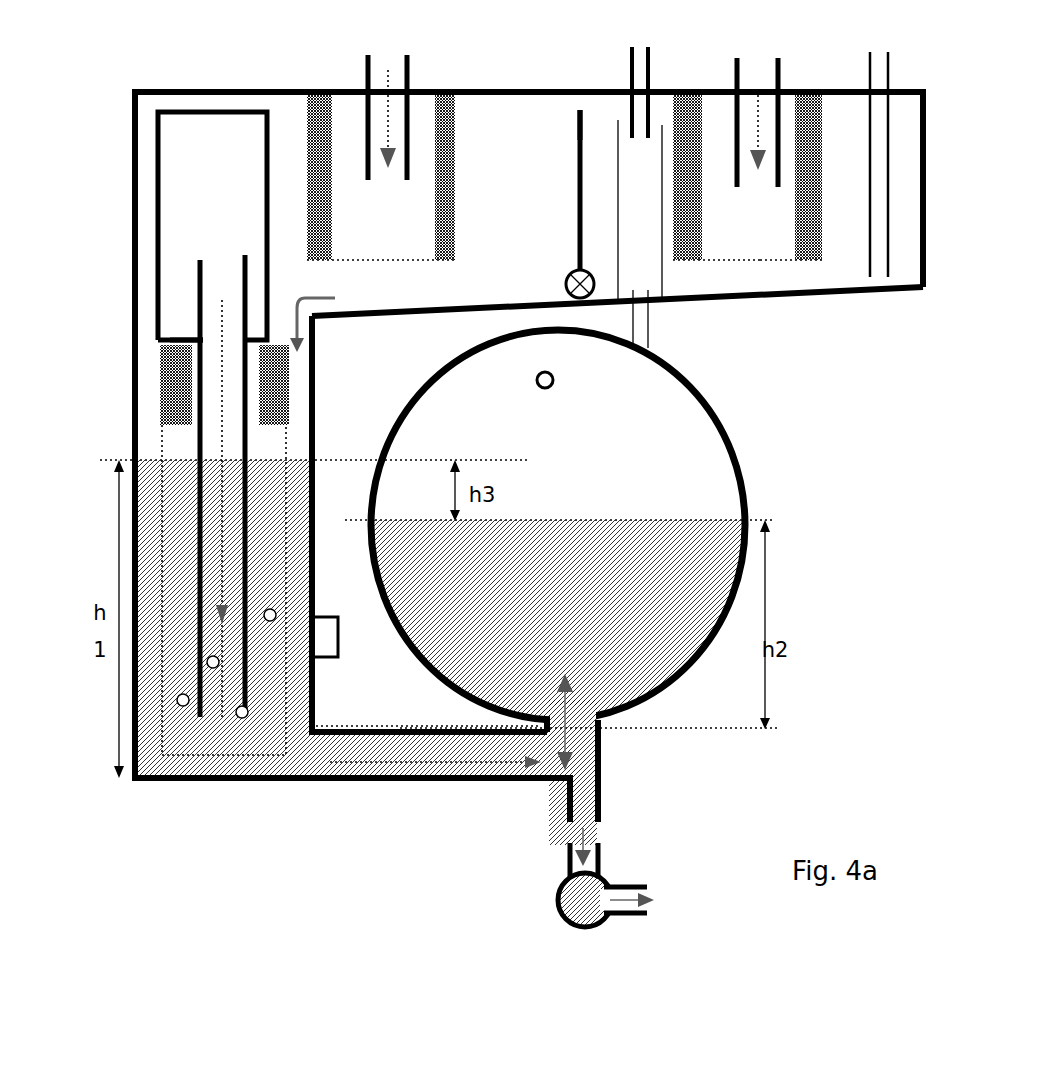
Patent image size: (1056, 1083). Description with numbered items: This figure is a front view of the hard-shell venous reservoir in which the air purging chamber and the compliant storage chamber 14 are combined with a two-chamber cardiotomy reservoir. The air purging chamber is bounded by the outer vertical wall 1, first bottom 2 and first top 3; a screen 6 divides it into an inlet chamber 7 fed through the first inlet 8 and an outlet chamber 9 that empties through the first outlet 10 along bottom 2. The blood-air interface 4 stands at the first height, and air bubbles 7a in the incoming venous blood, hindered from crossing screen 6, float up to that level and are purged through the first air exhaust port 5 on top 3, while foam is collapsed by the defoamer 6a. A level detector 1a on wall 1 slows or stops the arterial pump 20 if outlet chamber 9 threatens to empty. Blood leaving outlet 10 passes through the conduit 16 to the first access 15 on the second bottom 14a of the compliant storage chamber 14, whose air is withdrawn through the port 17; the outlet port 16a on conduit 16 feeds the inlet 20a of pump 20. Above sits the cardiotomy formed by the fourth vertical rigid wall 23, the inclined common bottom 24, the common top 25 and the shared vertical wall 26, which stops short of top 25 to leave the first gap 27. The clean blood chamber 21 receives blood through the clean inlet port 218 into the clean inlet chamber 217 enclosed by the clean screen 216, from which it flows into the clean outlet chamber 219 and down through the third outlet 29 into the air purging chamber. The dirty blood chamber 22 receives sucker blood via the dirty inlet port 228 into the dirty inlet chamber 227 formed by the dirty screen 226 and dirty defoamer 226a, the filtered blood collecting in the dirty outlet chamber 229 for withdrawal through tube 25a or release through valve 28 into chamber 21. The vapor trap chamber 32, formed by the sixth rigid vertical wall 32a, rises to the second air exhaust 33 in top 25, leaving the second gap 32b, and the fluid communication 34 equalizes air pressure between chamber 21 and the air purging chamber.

The outer vertical wall 1 is at (132, 378).
The level detector 1a is at (323, 617).
The first bottom 2 is at (192, 778).
The first top 3 is at (183, 338).
The interface 4 is at (177, 458).
The first air exhaust port 5 is at (145, 177).
The screen 6 is at (315, 693).
The defoamer 6a is at (260, 380).
The inlet chamber 7 is at (258, 815).
The air bubbles 7a is at (183, 700).
The first inlet 8 is at (220, 300).
The outlet chamber 9 is at (152, 778).
The first outlet 10 is at (305, 752).
The compliant storage chamber 14 is at (640, 477).
The second bottom 14a is at (600, 730).
The first access 15 is at (600, 752).
The conduit 16 is at (417, 785).
The outlet port 16a is at (565, 810).
The port 17 is at (555, 380).
The arterial pump 20 is at (560, 900).
The inlet 20a is at (605, 855).
The clean blood chamber 21 is at (504, 160).
The dirty blood chamber 22 is at (852, 196).
The fourth vertical rigid wall 23 is at (922, 207).
The common bottom 24 is at (875, 335).
The common top 25 is at (905, 92).
The tube 25a is at (880, 140).
The shared vertical wall 26 is at (578, 133).
The first gap 27 is at (580, 110).
The valve 28 is at (571, 274).
The third outlet 29 is at (320, 318).
The vapor trap chamber 32 is at (637, 273).
The sixth rigid vertical wall 32a is at (650, 323).
The second gap 32b is at (655, 127).
The second air exhaust 33 is at (640, 79).
The fluid communication 34 is at (232, 98).
The clean screen 216 is at (503, 268).
The clean inlet chamber 217 is at (381, 241).
The clean inlet port 218 is at (387, 100).
The clean outlet chamber 219 is at (571, 210).
The dirty screen 226 is at (780, 262).
The dirty defoamer 226a is at (810, 95).
The dirty inlet chamber 227 is at (726, 240).
The dirty inlet port 228 is at (758, 102).
The dirty outlet chamber 229 is at (814, 241).